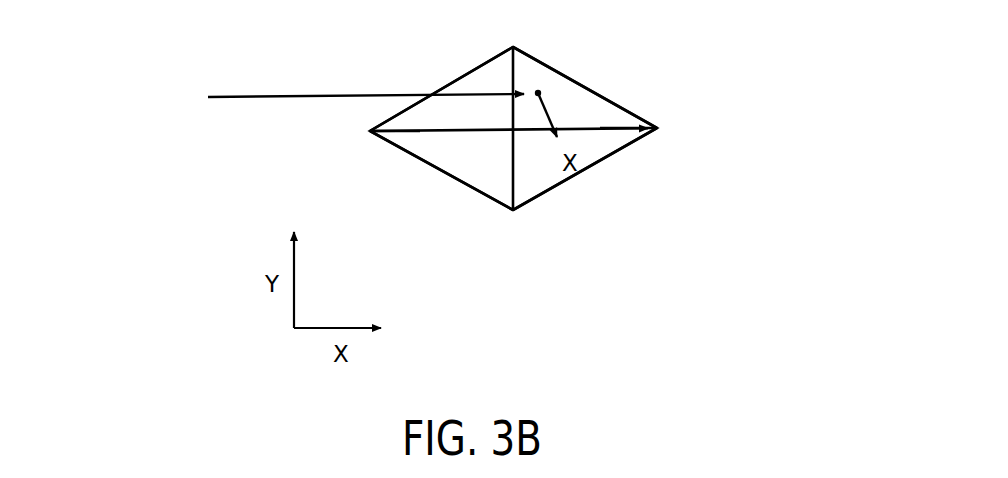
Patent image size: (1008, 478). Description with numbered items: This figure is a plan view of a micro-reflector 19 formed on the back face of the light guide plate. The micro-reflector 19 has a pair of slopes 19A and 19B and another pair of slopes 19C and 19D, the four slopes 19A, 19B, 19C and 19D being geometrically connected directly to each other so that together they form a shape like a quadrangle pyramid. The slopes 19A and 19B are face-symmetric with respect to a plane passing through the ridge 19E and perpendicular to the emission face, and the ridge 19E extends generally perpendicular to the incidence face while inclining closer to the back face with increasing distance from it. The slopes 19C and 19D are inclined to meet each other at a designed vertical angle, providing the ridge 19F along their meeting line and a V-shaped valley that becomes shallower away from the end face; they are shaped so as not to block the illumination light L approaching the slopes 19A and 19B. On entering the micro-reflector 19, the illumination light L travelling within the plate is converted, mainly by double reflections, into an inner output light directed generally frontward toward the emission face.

The micro-reflector 19 is at (432, 206).
The slope 19A is at (603, 152).
The slope 19B is at (573, 96).
The slope 19C is at (485, 180).
The slope 19D is at (480, 81).
The ridge 19E is at (630, 128).
The ridge 19F is at (403, 137).
The illumination light L is at (323, 97).